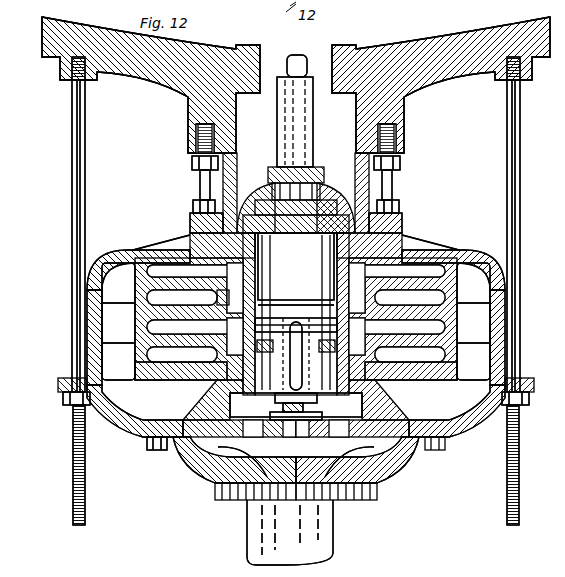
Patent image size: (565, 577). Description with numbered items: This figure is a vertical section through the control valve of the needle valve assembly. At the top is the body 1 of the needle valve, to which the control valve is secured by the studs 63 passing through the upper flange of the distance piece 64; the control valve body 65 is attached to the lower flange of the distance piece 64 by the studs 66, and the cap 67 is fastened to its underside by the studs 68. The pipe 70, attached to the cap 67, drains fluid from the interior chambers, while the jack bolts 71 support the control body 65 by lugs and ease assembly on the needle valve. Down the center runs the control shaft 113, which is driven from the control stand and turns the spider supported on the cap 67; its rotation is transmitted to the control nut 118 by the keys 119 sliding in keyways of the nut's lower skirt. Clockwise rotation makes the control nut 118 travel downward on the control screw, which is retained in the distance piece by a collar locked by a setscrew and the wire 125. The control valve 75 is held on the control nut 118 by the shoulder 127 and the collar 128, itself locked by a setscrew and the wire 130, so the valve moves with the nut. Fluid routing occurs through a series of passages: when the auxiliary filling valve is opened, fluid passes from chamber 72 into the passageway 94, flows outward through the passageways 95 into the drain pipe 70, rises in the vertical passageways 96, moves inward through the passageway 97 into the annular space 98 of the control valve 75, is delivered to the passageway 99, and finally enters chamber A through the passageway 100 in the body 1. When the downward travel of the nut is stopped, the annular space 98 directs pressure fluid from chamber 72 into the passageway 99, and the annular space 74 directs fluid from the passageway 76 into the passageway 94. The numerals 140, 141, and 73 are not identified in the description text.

The body 1 is at (447, 40).
The control shaft 113 is at (308, 56).
The valve stem 140 is at (300, 114).
The passageway 100 is at (263, 121).
The studs 63 is at (195, 177).
The distance piece 64 is at (394, 189).
The wire 125 is at (205, 207).
The studs 66 is at (408, 213).
The wire 130 is at (191, 222).
The collar 128 is at (410, 222).
The control valve body 65 is at (134, 250).
The jack bolts 71 is at (70, 207).
The passageway 97 is at (212, 271).
The annular space 98 is at (297, 288).
The control nut 118 is at (310, 288).
The passageway 99 is at (150, 298).
The port 141 is at (228, 299).
The shoulder 127 is at (260, 306).
The vertical passageways 96 is at (120, 356).
The chamber 72 is at (206, 327).
The annular space 74 is at (297, 336).
The passageway 76 is at (208, 355).
The control valve 75 is at (240, 370).
The keys 119 is at (298, 361).
The passageway 94 is at (214, 382).
The plate 73 is at (228, 407).
The passageways 95 is at (289, 458).
The studs 68 is at (147, 446).
The cap 67 is at (186, 474).
The pipe 70 is at (335, 546).